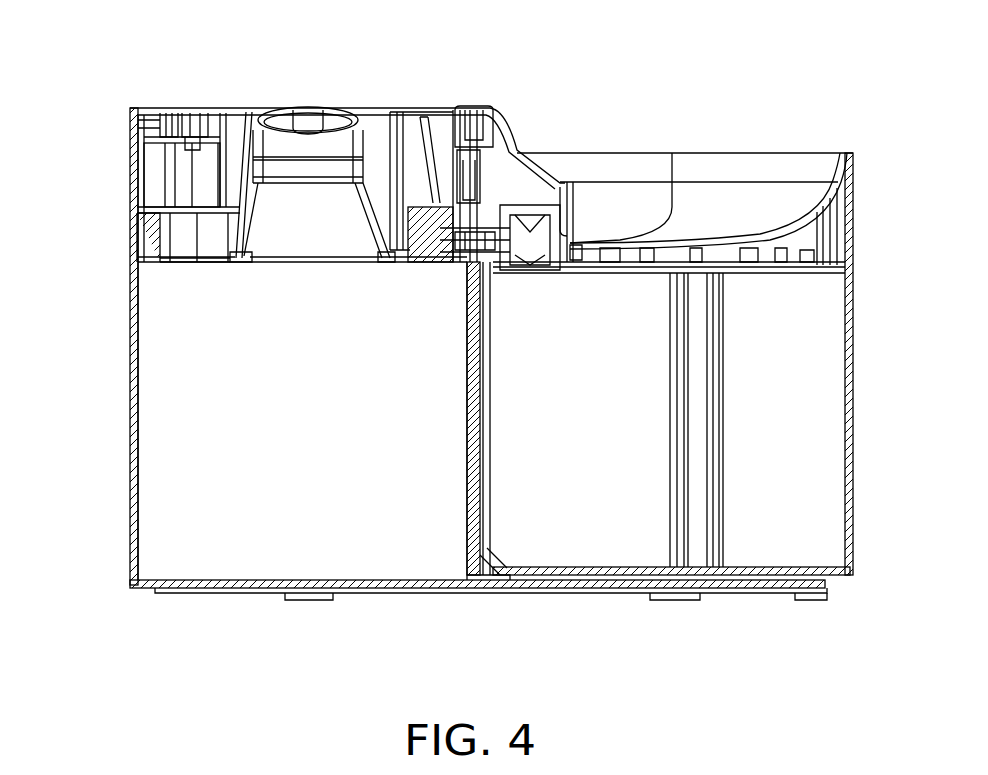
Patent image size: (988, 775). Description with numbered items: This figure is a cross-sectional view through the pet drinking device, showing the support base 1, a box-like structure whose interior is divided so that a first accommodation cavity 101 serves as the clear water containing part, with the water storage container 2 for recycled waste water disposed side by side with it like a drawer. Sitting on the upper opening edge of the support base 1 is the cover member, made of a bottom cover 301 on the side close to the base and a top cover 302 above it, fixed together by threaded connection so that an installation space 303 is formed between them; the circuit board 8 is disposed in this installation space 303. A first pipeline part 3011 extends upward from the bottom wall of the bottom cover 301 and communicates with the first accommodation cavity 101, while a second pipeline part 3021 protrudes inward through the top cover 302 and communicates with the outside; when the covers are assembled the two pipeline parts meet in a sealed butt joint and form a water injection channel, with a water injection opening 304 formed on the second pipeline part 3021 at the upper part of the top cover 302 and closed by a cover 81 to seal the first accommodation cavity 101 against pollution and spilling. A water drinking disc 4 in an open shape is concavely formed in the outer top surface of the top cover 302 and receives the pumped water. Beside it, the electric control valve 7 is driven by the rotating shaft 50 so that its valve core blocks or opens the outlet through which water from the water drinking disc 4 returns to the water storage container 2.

The support base 1 is at (132, 413).
The first accommodation cavity 101 is at (188, 462).
The water storage container 2 is at (850, 403).
The bottom cover 301 is at (190, 262).
The first pipeline part 3011 is at (258, 240).
The top cover 302 is at (133, 187).
The second pipeline part 3021 is at (250, 130).
The installation space 303 is at (147, 160).
The water injection opening 304 is at (373, 113).
The water drinking disc 4 is at (738, 188).
The electric control valve 7 is at (507, 273).
The circuit board 8 is at (140, 140).
The cover 81 is at (295, 103).
The rotating shaft 50 is at (467, 238).